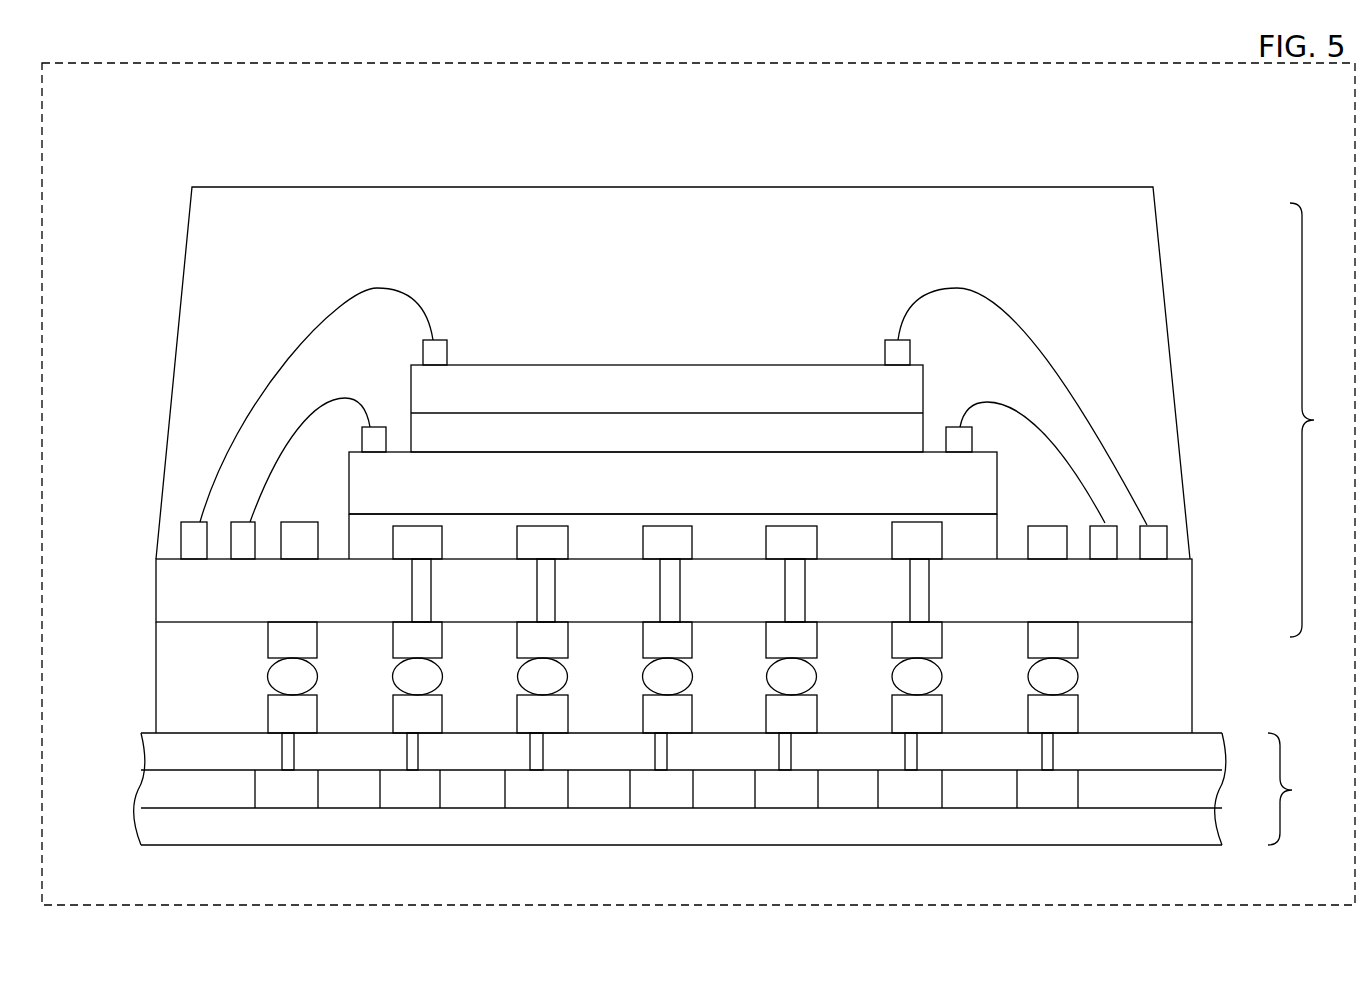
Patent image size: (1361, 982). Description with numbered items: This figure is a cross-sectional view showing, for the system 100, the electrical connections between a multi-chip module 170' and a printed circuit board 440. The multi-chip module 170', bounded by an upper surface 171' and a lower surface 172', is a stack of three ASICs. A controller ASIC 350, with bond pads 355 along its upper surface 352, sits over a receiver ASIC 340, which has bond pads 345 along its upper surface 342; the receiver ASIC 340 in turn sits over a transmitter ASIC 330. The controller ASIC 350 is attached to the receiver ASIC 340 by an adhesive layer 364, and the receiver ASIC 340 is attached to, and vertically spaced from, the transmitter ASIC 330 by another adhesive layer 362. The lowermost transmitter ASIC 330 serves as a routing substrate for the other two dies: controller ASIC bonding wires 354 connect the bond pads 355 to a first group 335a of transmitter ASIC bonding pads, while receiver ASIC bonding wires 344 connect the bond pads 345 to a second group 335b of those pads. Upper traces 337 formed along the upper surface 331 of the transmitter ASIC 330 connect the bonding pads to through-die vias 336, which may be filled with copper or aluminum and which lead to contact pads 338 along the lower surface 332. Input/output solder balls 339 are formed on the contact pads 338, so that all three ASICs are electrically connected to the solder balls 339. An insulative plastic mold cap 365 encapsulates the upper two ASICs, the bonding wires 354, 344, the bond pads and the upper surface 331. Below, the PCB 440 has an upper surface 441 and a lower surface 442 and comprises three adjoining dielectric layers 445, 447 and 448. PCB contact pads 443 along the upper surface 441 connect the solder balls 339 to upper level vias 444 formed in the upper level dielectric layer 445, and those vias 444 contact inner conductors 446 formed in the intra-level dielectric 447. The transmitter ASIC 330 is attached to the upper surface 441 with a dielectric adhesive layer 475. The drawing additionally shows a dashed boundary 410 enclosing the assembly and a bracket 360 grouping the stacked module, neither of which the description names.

The system 100 is at (698, 453).
The enclosure boundary 410 is at (365, 63).
The semiconductor device assembly 360 is at (1325, 420).
The insulative plastic mold cap 365 is at (327, 251).
The multi-chip module 170' is at (127, 236).
The upper surface of multi-chip module 171' is at (650, 150).
The lower surface of multi-chip module 172' is at (1199, 662).
The controller ASIC 350 is at (670, 404).
The adhesive layer 364 is at (595, 444).
The upper surface of controller ASIC 352 is at (545, 365).
The controller ASIC bond pads 355 is at (877, 340).
The receiver ASIC 340 is at (670, 487).
The upper surface of receiver ASIC 342 is at (492, 452).
The adhesive layer 362 is at (634, 544).
The receiver ASIC bond pads 345 is at (950, 432).
The controller ASIC bonding wires 354 is at (947, 288).
The receiver ASIC bonding wires 344 is at (1037, 413).
The transmitter ASIC 330 is at (377, 600).
The upper surface of transmitter ASIC 331 is at (1180, 557).
The lower surface of transmitter ASIC 332 is at (1168, 622).
The through-die vias 336 is at (930, 583).
The first group of transmitter ASIC bonding pads 335a is at (193, 535).
The second group of transmitter ASIC bonding pads 335b is at (243, 533).
The upper traces 337 is at (436, 557).
The dielectric adhesive layer 475 is at (242, 656).
The contact pads 338 is at (936, 651).
The input/output solder balls 339 is at (280, 682).
The PCB contact pads 443 is at (686, 724).
The printed circuit board 440 is at (737, 789).
The upper surface of PCB 441 is at (195, 733).
The lower surface of PCB 442 is at (192, 845).
The upper level dielectric layer 445 is at (239, 764).
The upper level vias 444 is at (294, 745).
The inner conductors 446 is at (302, 801).
The intra-level dielectric 447 is at (227, 801).
The dielectric layer 448 is at (889, 836).